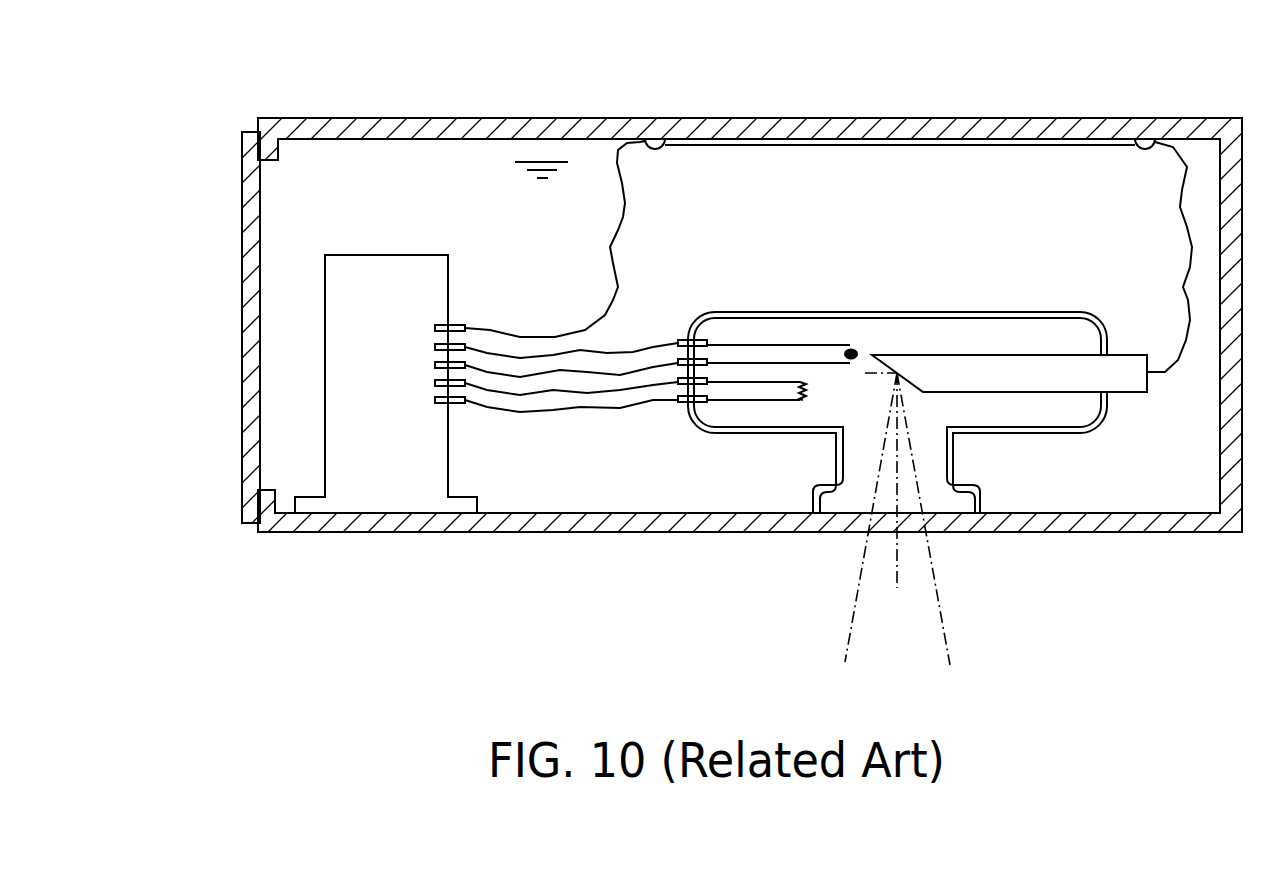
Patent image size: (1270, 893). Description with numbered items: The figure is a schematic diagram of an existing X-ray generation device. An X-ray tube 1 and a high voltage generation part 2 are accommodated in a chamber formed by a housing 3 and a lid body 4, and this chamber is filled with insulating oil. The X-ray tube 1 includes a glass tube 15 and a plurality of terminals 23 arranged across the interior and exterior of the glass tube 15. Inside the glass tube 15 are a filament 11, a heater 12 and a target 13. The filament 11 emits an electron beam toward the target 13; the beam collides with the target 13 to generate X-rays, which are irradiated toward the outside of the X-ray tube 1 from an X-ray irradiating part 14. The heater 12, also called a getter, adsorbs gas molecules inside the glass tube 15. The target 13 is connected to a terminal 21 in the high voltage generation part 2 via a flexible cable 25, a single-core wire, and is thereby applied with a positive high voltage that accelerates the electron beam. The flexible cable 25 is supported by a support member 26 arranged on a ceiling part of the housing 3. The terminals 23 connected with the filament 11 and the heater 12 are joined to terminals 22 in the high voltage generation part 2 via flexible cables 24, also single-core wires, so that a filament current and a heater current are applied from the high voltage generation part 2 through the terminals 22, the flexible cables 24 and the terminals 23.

The X-ray tube 1 is at (926, 443).
The high voltage generation part 2 is at (396, 223).
The housing 3 is at (846, 118).
The lid body 4 is at (242, 246).
The filament 11 is at (857, 356).
The heater 12 is at (808, 402).
The target 13 is at (963, 373).
The X-ray irradiating part 14 is at (890, 611).
The glass tube 15 is at (1080, 312).
The terminal 21 is at (465, 329).
The terminals 22 is at (435, 365).
The terminals 23 is at (680, 343).
The flexible cables 24 is at (532, 380).
The flexible cable 25 is at (625, 218).
The support member 26 is at (657, 152).